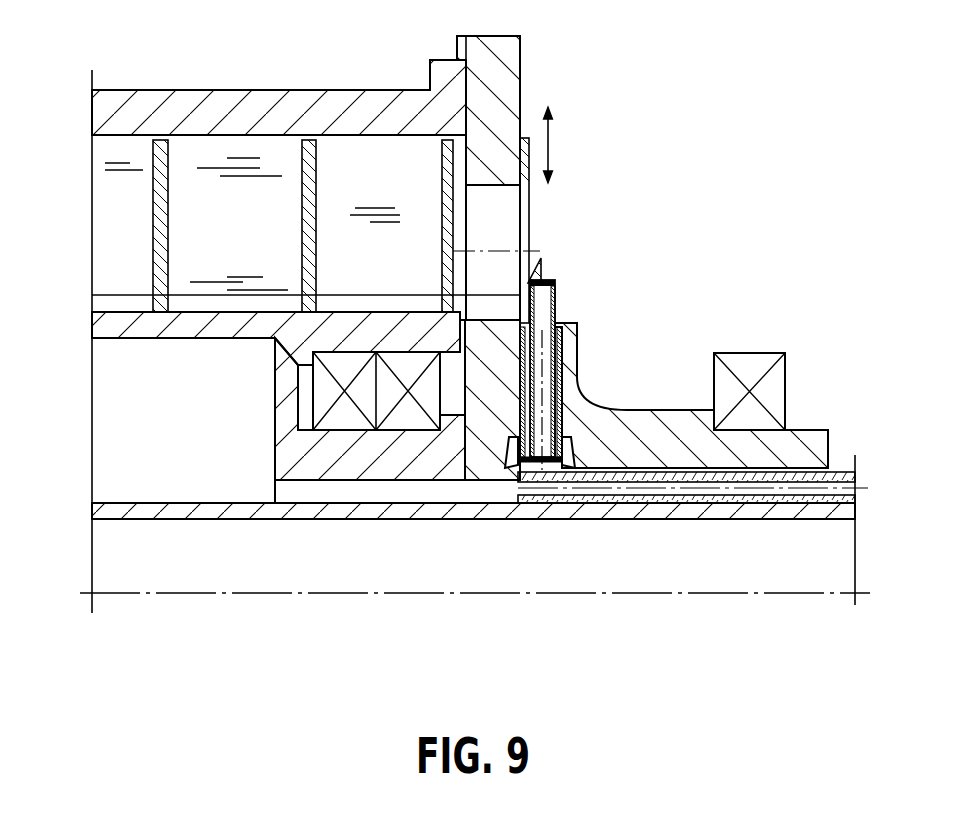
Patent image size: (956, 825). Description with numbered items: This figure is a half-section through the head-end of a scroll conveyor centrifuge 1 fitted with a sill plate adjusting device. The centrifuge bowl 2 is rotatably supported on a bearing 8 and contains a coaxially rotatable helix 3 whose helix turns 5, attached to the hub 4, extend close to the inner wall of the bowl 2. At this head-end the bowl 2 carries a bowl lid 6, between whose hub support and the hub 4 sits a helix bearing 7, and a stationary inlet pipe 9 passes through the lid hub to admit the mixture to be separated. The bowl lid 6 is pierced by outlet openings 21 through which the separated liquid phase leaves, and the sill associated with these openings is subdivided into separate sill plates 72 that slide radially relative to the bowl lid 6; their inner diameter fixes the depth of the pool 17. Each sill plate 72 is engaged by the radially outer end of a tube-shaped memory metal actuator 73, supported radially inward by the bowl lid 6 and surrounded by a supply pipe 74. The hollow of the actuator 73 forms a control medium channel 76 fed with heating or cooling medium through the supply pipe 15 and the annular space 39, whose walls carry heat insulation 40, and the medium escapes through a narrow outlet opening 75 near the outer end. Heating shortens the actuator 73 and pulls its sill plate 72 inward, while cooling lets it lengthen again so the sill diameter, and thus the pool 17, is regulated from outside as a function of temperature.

The scroll conveyor centrifuge 1 is at (665, 230).
The centrifuge bowl 2 is at (272, 112).
The helix 3 is at (126, 210).
The hub 4 is at (112, 322).
The helix turns 5 is at (160, 243).
The bowl lid 6 is at (503, 98).
The helix bearing 7 is at (328, 392).
The bearing 8 is at (770, 387).
The inlet pipe 9 is at (803, 505).
The supply pipe 15 is at (708, 453).
The pool 17 is at (398, 183).
The outlet openings 21 is at (500, 215).
The annular space 39 is at (528, 468).
The heat insulation 40 is at (506, 455).
The sill plates 72 is at (526, 232).
The actuator 73 is at (556, 307).
The supply pipe 74 is at (552, 360).
The outlet opening 75 is at (541, 282).
The control medium channel 76 is at (542, 390).